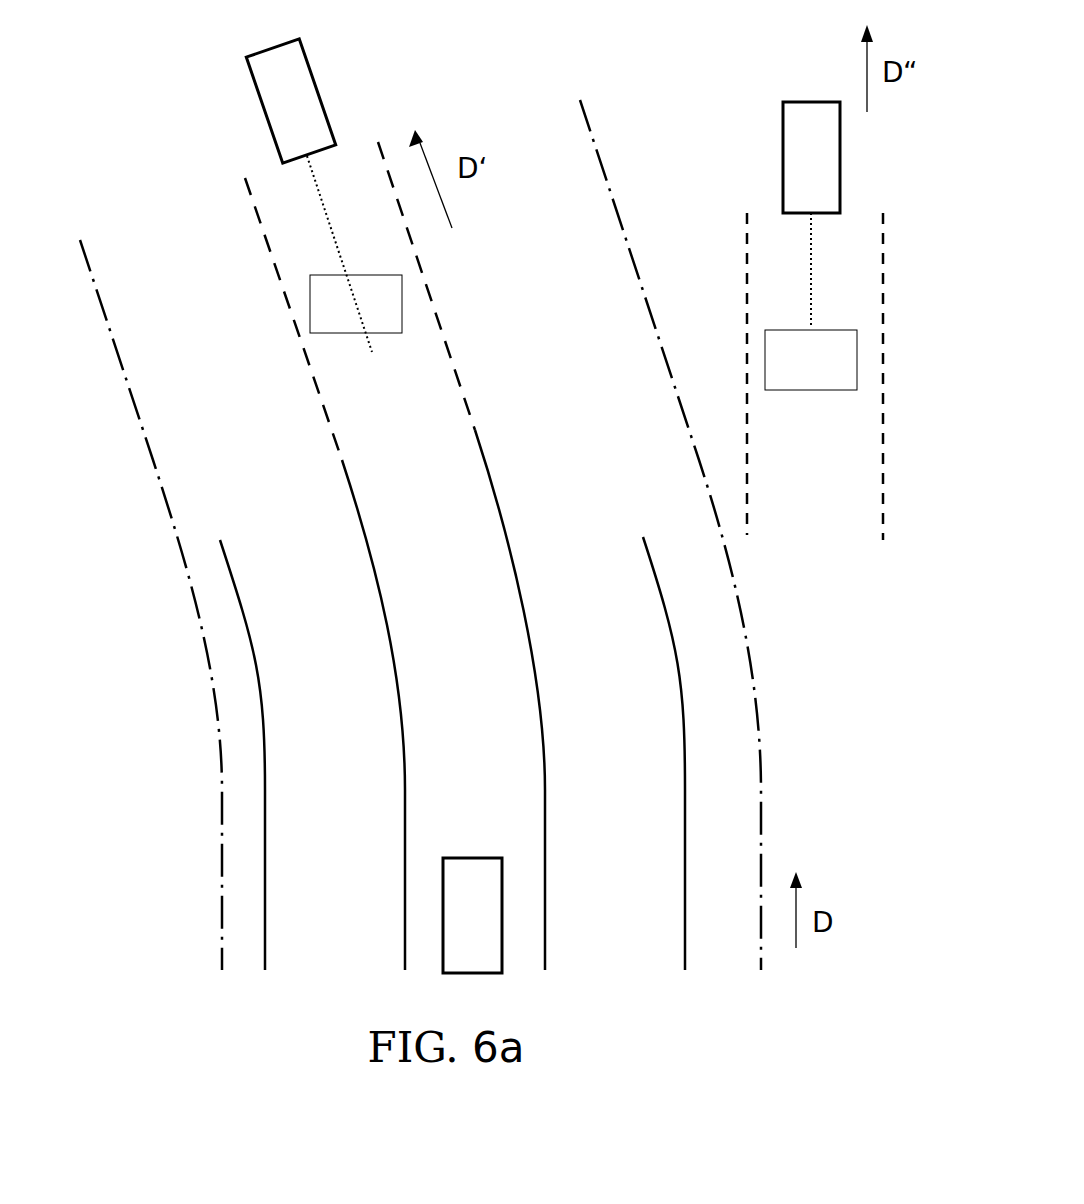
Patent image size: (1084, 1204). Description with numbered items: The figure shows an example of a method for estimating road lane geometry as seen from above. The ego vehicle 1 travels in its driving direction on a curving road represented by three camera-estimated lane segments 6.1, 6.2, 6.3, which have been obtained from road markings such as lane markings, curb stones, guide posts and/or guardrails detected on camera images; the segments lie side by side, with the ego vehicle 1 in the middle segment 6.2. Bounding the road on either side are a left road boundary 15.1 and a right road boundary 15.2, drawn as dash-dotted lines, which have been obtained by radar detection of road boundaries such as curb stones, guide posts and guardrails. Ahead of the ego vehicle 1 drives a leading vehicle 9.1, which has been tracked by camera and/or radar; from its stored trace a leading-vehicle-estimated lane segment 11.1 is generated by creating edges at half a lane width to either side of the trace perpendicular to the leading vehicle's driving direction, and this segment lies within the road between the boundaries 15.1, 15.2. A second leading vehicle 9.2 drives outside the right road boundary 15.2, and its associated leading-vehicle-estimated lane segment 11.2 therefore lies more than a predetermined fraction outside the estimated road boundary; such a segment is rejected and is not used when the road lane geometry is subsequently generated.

The ego vehicle 1 is at (463, 932).
The camera-estimated lane segment 6.1 is at (345, 701).
The camera-estimated lane segment 6.2 is at (486, 701).
The camera-estimated lane segment 6.3 is at (626, 701).
The leading vehicle 9.1 is at (288, 80).
The leading vehicle 9.2 is at (809, 136).
The leading-vehicle-estimated lane segment 11.1 is at (325, 318).
The leading-vehicle-estimated lane segment 11.2 is at (780, 374).
The left road boundary 15.1 is at (222, 875).
The right road boundary 15.2 is at (749, 680).